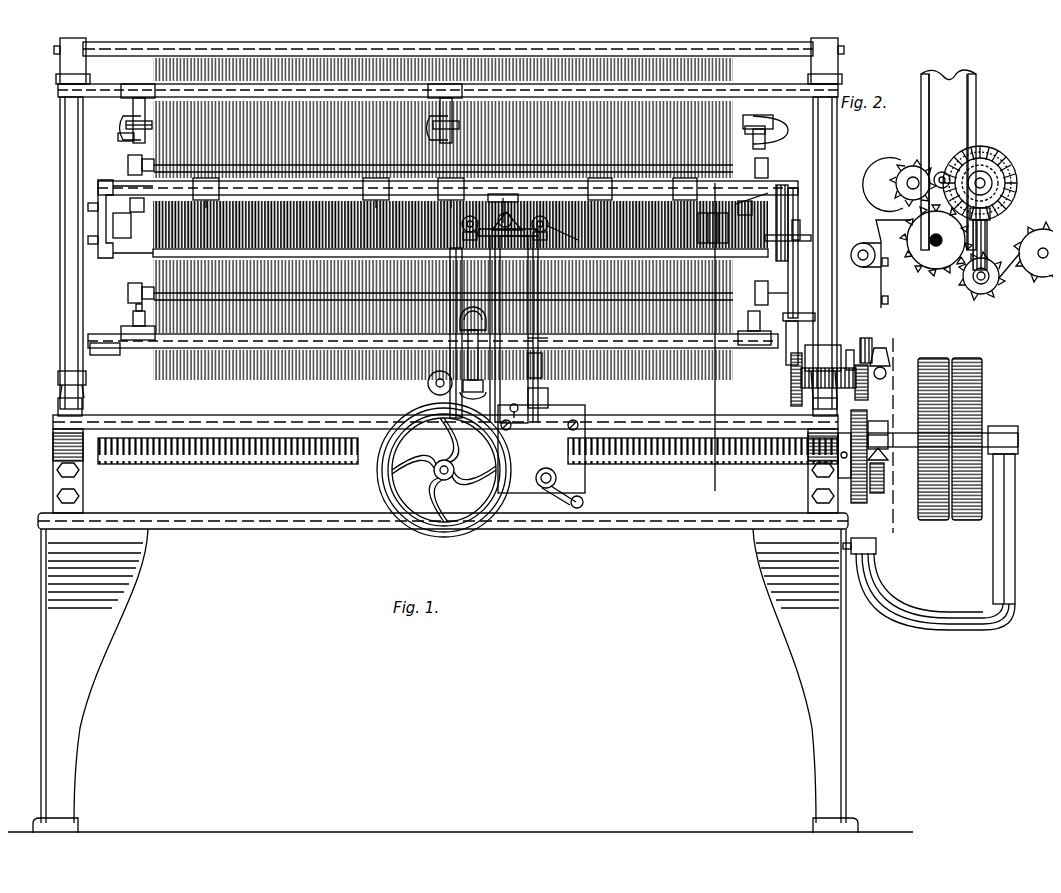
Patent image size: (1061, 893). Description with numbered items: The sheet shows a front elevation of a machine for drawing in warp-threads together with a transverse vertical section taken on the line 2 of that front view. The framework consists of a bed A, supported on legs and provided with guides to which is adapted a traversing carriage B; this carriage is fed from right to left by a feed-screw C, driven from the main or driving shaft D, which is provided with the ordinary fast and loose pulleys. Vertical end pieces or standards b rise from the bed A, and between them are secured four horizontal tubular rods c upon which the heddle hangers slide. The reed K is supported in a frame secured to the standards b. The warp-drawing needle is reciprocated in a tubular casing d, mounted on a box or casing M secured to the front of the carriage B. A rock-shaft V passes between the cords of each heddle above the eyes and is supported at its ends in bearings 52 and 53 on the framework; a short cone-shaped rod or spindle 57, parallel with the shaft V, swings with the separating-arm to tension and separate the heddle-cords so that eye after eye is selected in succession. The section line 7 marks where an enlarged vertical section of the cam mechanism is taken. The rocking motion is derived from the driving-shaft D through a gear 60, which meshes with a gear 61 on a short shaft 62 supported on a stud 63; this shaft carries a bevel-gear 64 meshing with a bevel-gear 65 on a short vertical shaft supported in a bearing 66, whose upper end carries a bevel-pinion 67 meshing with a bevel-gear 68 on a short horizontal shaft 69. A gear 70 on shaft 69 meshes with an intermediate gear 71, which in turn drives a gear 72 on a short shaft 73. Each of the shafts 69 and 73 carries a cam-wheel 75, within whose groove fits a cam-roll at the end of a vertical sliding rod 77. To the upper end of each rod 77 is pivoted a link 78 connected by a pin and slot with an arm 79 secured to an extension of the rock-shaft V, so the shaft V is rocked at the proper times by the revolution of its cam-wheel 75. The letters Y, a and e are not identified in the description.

In FIG. 1, the bed A is at (460, 589).
In FIG. 1, the traversing carriage B is at (541, 456).
In FIG. 1, the feed-screw C is at (322, 458).
In FIG. 1, the driving shaft D is at (929, 494).
In FIG. 2, the driving shaft D is at (925, 250).
In FIG. 1, the reed K is at (720, 222).
In FIG. 1, the box or casing M is at (503, 317).
In FIG. 1, the rock-shaft V is at (140, 200).
In FIG. 1, the lever Y is at (730, 195).
In FIG. 1, the clamp a is at (116, 124).
In FIG. 1, the standards b is at (52, 253).
In FIG. 1, the horizontal tubular rods c is at (105, 90).
In FIG. 1, the tubular casing d is at (516, 273).
In FIG. 1, the top rail e is at (598, 62).
In FIG. 1, the section line 2 is at (883, 423).
In FIG. 1, the section line 7 is at (794, 145).
In FIG. 1, the bearing 52 is at (120, 197).
In FIG. 1, the bearing 53 is at (757, 195).
In FIG. 1, the rod or spindle 57 is at (496, 188).
In FIG. 1, the gear 60 is at (843, 430).
In FIG. 2, the gear 60 is at (936, 240).
In FIG. 1, the gear 61 is at (852, 495).
In FIG. 2, the gear 61 is at (993, 280).
In FIG. 2, the short shaft 62 is at (976, 290).
In FIG. 1, the stud 63 is at (836, 470).
In FIG. 1, the bevel-gear 64 is at (872, 480).
In FIG. 2, the bevel-gear 64 is at (960, 280).
In FIG. 1, the bevel-gear 65 is at (883, 470).
In FIG. 2, the bevel-gear 65 is at (1000, 240).
In FIG. 1, the bearing 66 is at (887, 413).
In FIG. 2, the bearing 66 is at (982, 228).
In FIG. 1, the bevel-pinion 67 is at (857, 390).
In FIG. 2, the bevel-pinion 67 is at (1005, 188).
In FIG. 1, the bevel-gear 68 is at (880, 340).
In FIG. 2, the bevel-gear 68 is at (1002, 163).
In FIG. 1, the short horizontal shaft 69 is at (880, 362).
In FIG. 2, the short horizontal shaft 69 is at (978, 170).
In FIG. 2, the gear 70 is at (980, 145).
In FIG. 2, the intermediate gear 71 is at (940, 160).
In FIG. 1, the gear 72 is at (860, 352).
In FIG. 2, the gear 72 is at (898, 162).
In FIG. 1, the short shaft 73 is at (861, 345).
In FIG. 2, the short shaft 73 is at (896, 214).
In FIG. 1, the cam-wheel 75 is at (783, 377).
In FIG. 2, the cam-wheel 75 is at (887, 178).
In FIG. 1, the vertical rod 77 is at (790, 263).
In FIG. 1, the link 78 is at (796, 212).
In FIG. 1, the arm 79 is at (786, 212).